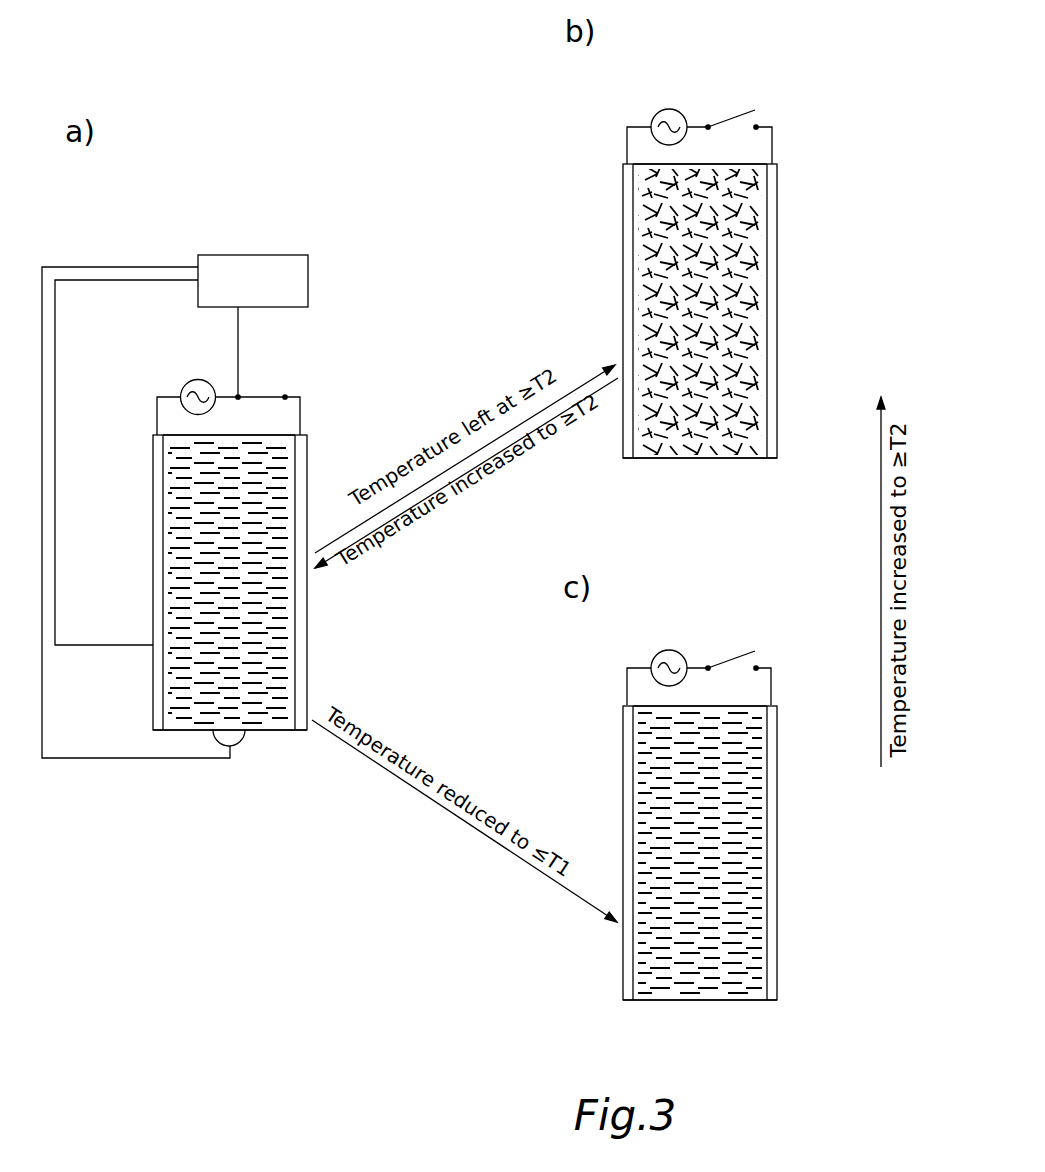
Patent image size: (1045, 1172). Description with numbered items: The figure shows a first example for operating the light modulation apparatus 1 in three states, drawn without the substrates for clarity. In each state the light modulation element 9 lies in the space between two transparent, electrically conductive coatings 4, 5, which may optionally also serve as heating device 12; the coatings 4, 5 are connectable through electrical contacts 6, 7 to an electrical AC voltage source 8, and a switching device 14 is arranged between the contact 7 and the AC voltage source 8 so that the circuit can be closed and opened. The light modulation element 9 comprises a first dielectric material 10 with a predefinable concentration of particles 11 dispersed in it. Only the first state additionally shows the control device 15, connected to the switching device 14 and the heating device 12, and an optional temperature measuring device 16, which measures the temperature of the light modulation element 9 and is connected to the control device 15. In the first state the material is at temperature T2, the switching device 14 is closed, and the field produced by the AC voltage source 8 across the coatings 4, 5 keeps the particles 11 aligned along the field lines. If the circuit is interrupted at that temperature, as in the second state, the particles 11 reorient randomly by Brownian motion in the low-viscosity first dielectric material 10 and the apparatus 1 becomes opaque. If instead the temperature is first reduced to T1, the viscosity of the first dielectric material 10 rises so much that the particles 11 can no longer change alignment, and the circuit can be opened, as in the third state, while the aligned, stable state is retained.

The light modulation apparatus 1 is at (327, 630).
The transparent, electrically conductive coating 4 is at (158, 612).
The transparent, electrically conductive coating 5 is at (300, 643).
The heating device 12 is at (487, 582).
The electrical contact 6 is at (157, 420).
The electrical contact 7 is at (300, 420).
The electrical AC voltage source 8 is at (198, 379).
The light modulation element 9 is at (278, 730).
The first dielectric material 10 is at (168, 500).
The particles 11 is at (283, 478).
The switching device 14 is at (262, 393).
The control device 15 is at (225, 268).
The temperature measuring device 16 is at (243, 750).